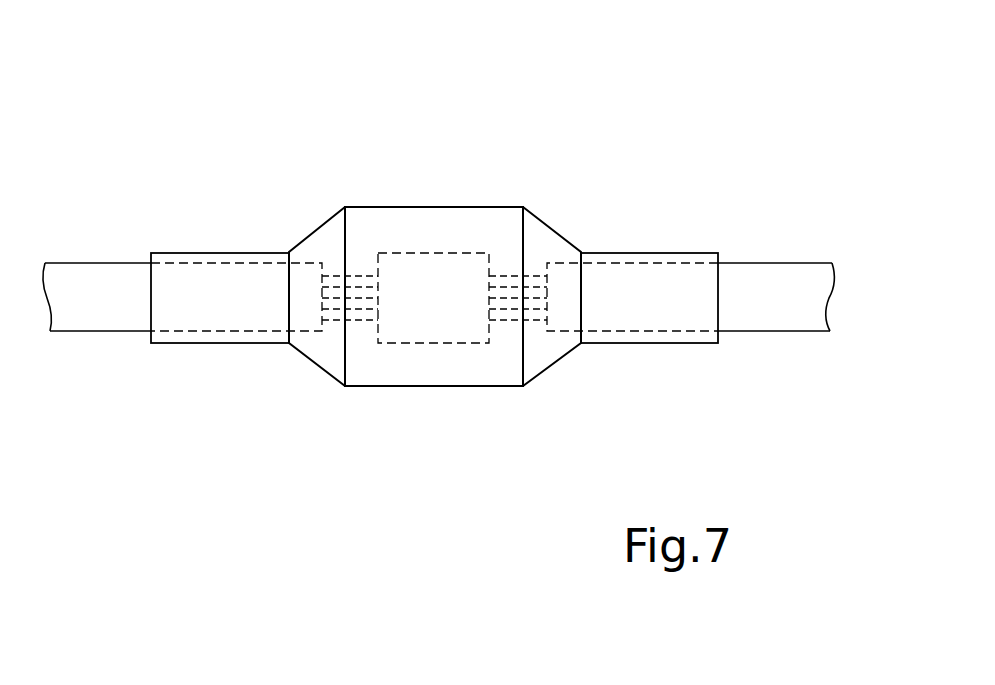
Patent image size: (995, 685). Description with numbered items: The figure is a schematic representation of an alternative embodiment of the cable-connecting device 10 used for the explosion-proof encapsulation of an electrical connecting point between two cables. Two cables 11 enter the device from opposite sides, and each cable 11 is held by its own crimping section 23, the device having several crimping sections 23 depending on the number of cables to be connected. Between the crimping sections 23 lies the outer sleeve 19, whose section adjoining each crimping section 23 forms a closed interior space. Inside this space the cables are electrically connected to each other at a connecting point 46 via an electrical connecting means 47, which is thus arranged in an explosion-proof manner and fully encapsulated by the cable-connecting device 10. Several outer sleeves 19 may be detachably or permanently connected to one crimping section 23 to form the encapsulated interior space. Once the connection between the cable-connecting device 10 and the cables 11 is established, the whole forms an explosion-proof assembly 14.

The cable-connecting device 10 is at (557, 180).
The cable 11 is at (96, 318).
The explosion-proof assembly 14 is at (720, 146).
The outer sleeve 19 is at (332, 218).
The crimping section 23 is at (217, 345).
The connecting point 46 is at (400, 349).
The electrical connecting means 47 is at (443, 350).